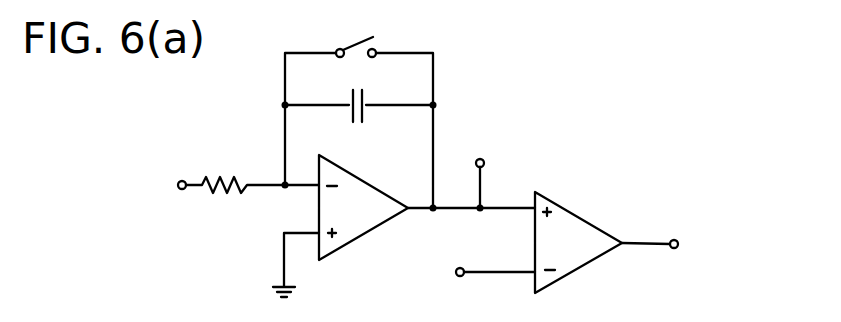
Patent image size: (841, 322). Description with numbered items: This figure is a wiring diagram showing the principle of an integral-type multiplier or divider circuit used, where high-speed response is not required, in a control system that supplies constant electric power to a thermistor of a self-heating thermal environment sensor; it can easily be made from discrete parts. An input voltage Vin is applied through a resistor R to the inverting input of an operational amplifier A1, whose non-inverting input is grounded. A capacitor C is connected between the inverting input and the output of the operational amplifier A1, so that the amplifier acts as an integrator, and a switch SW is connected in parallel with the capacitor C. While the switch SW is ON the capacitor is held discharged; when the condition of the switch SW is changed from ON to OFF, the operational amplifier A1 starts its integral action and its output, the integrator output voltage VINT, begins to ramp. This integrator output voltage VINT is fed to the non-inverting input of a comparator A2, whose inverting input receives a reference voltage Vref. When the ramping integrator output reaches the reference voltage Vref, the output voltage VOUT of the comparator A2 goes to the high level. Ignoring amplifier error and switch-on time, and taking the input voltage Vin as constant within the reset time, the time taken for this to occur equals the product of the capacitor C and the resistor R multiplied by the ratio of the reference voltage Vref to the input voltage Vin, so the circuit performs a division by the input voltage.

The switch SW is at (357, 38).
The capacitor C is at (348, 117).
The resistor R is at (230, 176).
The operational amplifier A1 is at (352, 241).
The comparator A2 is at (612, 249).
The input voltage Vin is at (154, 206).
The integrator output voltage VINT is at (494, 160).
The reference voltage Vref is at (468, 281).
The output voltage VOUT is at (689, 245).